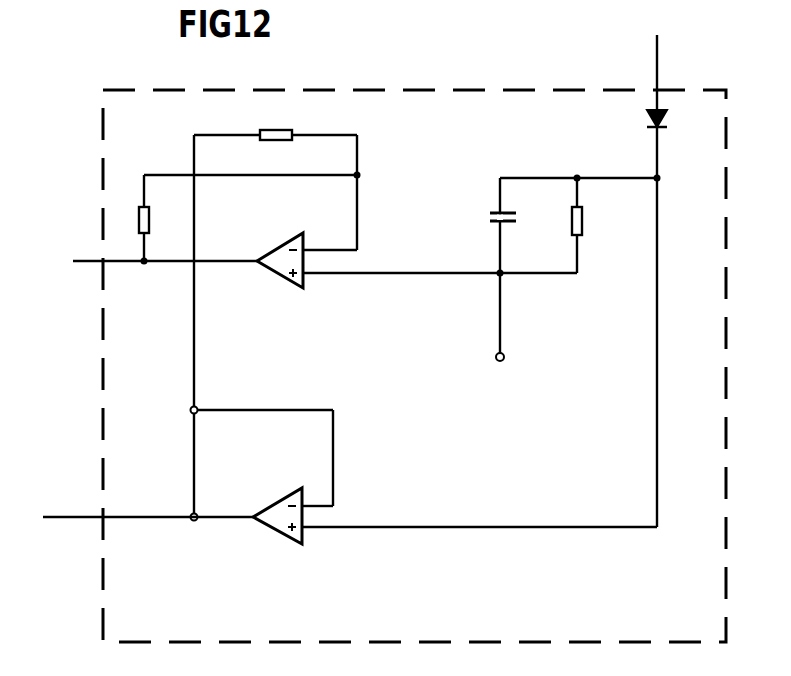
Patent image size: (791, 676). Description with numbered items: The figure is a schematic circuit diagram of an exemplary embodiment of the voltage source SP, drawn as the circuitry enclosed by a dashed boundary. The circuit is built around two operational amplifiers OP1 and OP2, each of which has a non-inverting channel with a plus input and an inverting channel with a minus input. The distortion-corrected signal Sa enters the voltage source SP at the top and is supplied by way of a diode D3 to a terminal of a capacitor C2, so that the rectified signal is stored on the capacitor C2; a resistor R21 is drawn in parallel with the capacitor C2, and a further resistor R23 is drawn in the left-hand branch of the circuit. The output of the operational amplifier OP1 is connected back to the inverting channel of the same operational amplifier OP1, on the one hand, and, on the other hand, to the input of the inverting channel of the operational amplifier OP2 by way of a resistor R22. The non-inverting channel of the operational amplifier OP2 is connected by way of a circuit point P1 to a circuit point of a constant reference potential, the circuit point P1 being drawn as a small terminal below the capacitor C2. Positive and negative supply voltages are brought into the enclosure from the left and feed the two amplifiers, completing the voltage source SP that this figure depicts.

The voltage source SP is at (414, 348).
The distortion-corrected signal Sa is at (672, 277).
The diode D3 is at (670, 119).
The resistor R22 is at (278, 152).
The resistor R23 is at (163, 218).
The resistor R21 is at (594, 222).
The capacitor C2 is at (487, 221).
The circuit point P1 is at (515, 361).
The operational amplifier OP2 is at (280, 277).
The operational amplifier OP1 is at (277, 534).